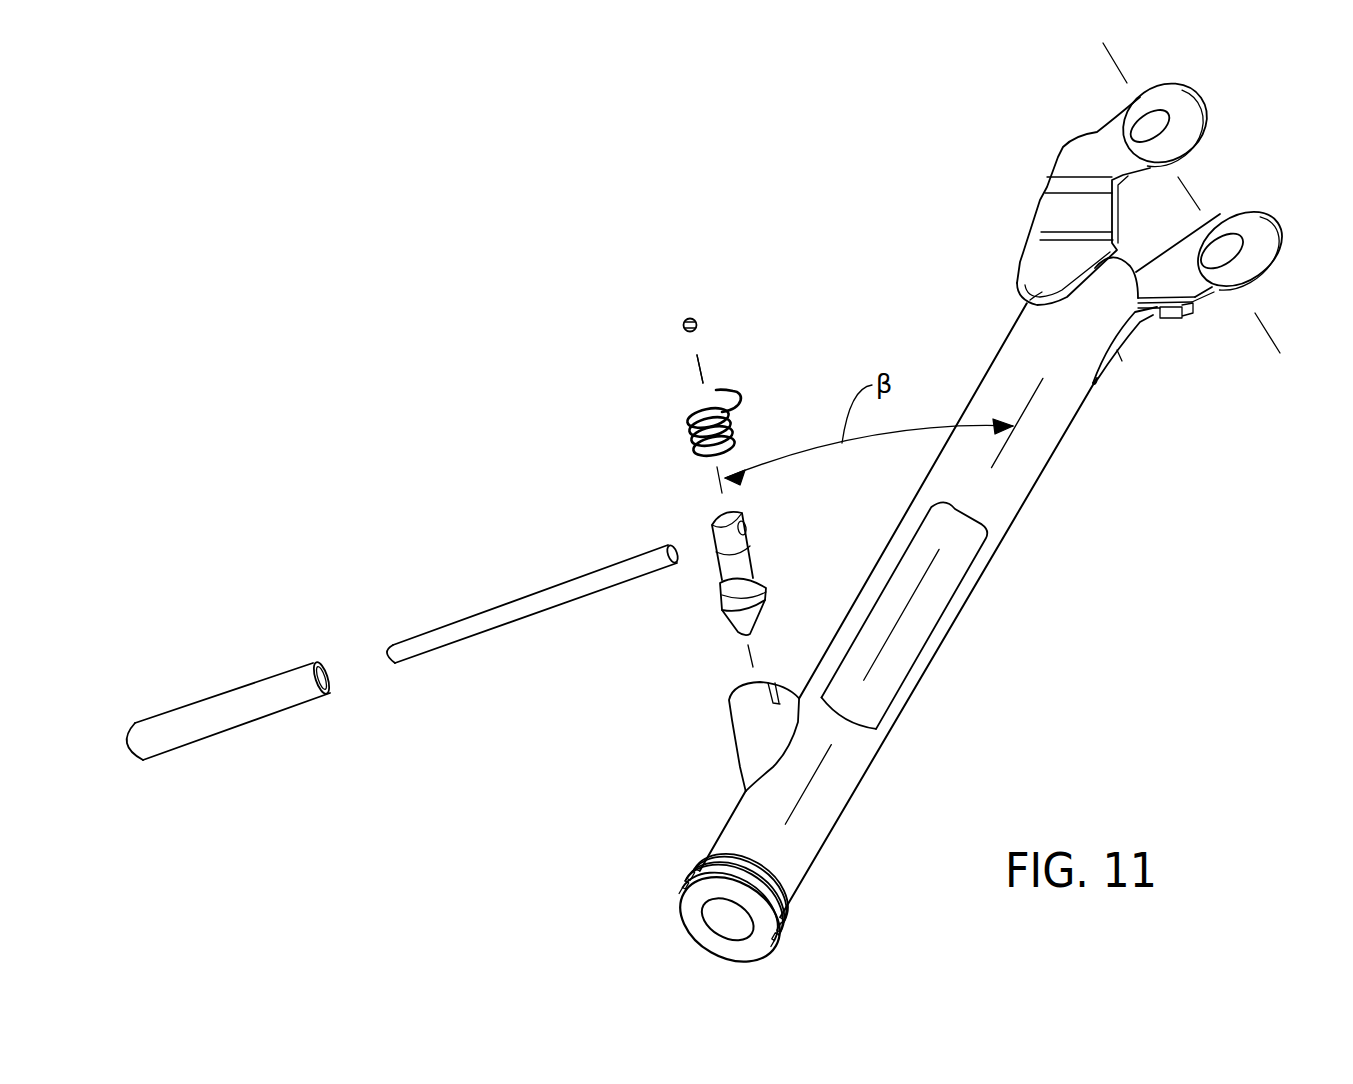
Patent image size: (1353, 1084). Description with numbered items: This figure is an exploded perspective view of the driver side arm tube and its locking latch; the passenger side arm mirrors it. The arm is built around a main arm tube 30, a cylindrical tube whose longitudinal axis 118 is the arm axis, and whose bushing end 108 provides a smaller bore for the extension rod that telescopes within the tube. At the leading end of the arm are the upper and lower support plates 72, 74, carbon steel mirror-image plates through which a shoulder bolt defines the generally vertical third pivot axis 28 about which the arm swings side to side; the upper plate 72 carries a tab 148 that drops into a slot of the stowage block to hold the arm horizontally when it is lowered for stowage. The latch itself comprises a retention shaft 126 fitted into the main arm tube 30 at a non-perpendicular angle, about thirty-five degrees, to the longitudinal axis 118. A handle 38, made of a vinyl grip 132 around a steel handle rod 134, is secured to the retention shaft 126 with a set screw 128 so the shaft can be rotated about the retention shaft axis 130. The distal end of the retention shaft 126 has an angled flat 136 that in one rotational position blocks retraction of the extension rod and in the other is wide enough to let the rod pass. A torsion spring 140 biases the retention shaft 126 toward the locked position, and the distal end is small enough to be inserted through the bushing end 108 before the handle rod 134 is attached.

The third pivot axis 28 is at (1197, 203).
The main arm tube 30 is at (1033, 440).
The handle 38 is at (387, 557).
The upper support plate 72 is at (1042, 277).
The lower support plate 74 is at (1196, 310).
The bushing end 108 is at (692, 898).
The longitudinal axis 118 is at (910, 603).
The retention shaft 126 is at (727, 565).
The set screw 128 is at (692, 318).
The retention shaft axis 130 is at (703, 368).
The vinyl grip 132 is at (233, 710).
The handle rod 134 is at (527, 600).
The angled flat 136 is at (758, 613).
The torsion spring 140 is at (735, 430).
The tab 148 is at (1065, 143).